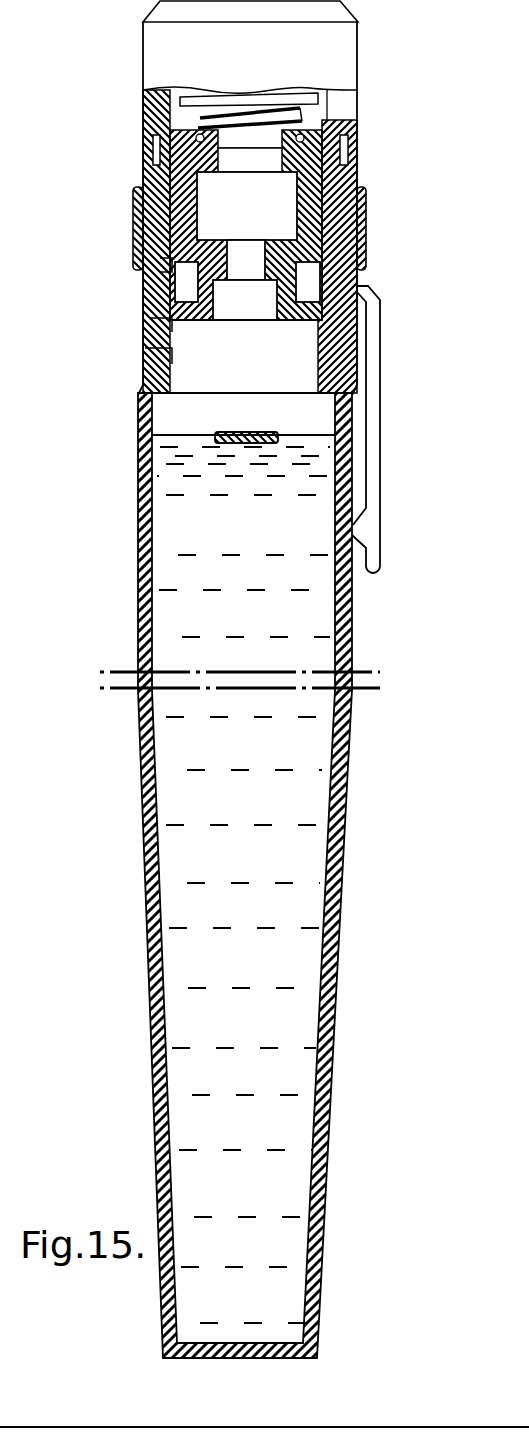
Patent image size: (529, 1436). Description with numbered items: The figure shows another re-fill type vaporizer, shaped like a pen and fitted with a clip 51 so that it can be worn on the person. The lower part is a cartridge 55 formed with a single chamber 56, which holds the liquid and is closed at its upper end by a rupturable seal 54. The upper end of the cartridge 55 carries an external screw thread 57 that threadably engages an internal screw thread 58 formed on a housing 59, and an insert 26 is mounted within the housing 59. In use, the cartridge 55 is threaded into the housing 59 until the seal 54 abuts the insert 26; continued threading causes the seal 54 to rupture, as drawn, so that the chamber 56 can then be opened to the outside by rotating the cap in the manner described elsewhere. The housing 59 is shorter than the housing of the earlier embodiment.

The insert 26 is at (337, 232).
The clip 51 is at (375, 350).
The rupturable seal 54 is at (258, 432).
The cartridge 55 is at (139, 592).
The chamber 56 is at (197, 614).
The external screw thread 57 is at (147, 356).
The internal screw thread 58 is at (158, 326).
The housing 59 is at (160, 265).